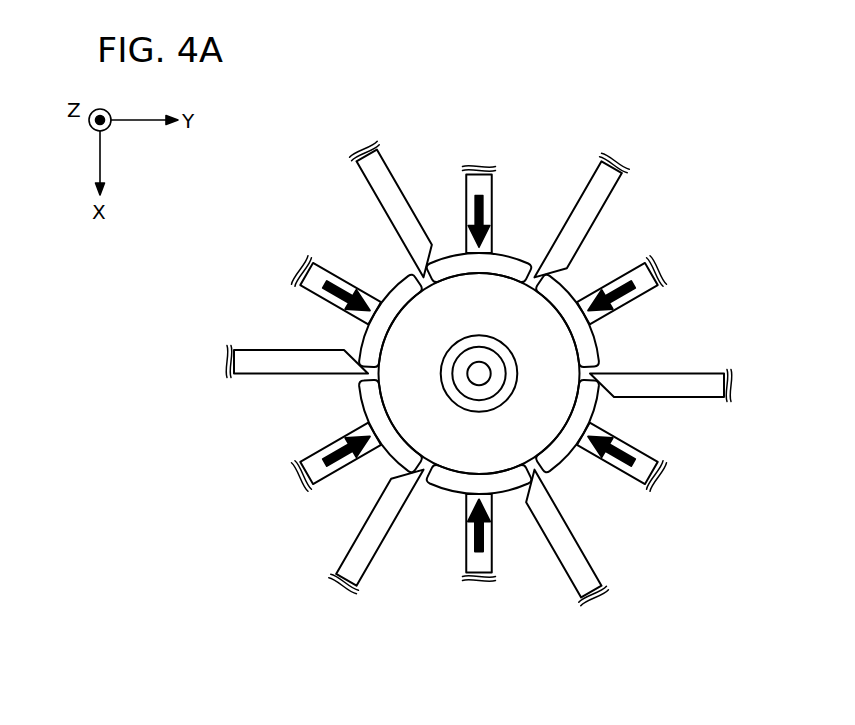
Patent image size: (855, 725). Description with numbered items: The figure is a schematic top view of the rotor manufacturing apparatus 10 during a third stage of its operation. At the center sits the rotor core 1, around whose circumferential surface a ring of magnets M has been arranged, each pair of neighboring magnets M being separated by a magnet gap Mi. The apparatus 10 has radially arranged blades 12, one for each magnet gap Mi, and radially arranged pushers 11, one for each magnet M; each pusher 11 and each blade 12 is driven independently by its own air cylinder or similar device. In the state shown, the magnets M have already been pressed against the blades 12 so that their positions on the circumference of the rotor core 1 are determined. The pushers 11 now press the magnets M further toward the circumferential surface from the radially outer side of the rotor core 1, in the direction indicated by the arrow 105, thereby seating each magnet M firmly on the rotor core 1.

The rotor core 1 is at (418, 313).
The rotor manufacturing apparatus 10 is at (636, 130).
The pusher 11 is at (494, 187).
The blade 12 is at (615, 189).
The arrow 105 is at (467, 203).
The magnet M is at (512, 252).
The magnet gap Mi is at (526, 288).